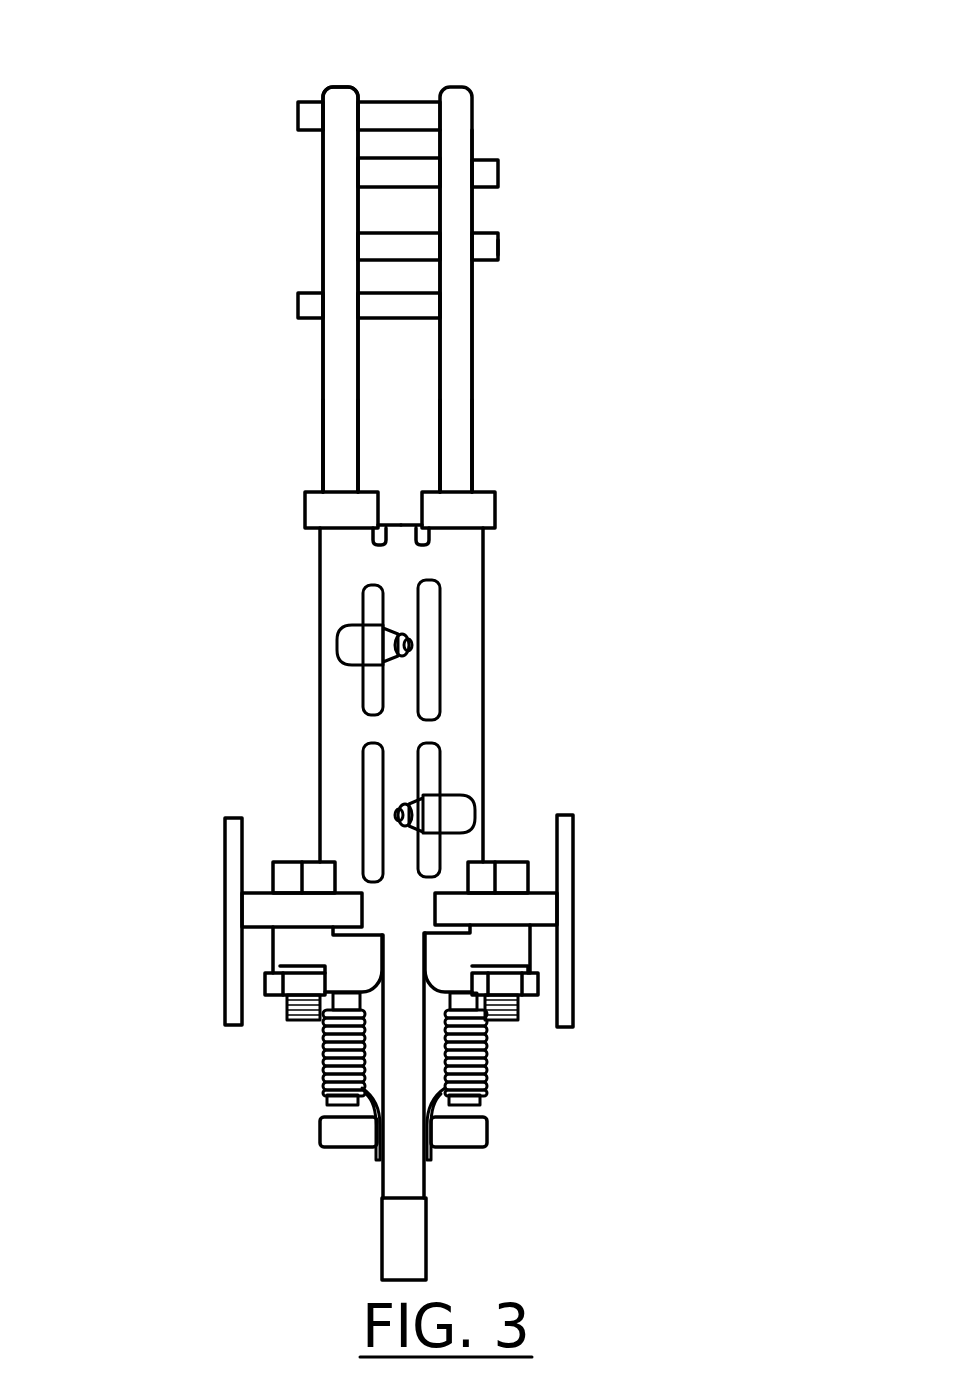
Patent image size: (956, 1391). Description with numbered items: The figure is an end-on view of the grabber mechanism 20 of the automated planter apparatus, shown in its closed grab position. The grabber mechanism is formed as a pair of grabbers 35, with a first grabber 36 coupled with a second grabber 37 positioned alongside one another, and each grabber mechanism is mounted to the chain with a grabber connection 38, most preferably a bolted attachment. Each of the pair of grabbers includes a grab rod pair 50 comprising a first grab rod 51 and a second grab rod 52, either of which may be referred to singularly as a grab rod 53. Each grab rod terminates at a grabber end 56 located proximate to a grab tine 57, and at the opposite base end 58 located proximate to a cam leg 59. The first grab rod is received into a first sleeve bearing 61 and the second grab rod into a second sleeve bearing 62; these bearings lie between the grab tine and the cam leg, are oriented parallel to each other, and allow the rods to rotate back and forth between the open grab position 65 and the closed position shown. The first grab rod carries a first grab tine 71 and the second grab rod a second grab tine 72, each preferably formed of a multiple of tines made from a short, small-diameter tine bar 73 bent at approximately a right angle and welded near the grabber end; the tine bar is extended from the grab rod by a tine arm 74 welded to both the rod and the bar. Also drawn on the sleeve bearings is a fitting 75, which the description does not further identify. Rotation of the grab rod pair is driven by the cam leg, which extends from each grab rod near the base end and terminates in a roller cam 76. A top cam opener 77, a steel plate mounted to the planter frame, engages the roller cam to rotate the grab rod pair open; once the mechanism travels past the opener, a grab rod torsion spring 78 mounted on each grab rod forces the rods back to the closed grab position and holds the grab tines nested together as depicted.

The grabber mechanism 20 is at (140, 78).
The pair of grabbers 35 is at (152, 193).
The first grabber 36 is at (280, 202).
The second grabber 37 is at (675, 259).
The grabber connection 38 is at (425, 1180).
The grab rod pair 50 is at (400, 58).
The first grab rod 51 is at (345, 275).
The second grab rod 52 is at (460, 282).
The grab rod 53 is at (342, 442).
The grabber end 56 is at (338, 88).
The grab tine 57 is at (510, 247).
The base end 58 is at (327, 1100).
The cam leg 59 is at (290, 935).
The first sleeve bearing 61 is at (333, 570).
The second sleeve bearing 62 is at (467, 550).
The open grab position 65 is at (530, 93).
The first grab tine 71 is at (532, 170).
The second grab tine 72 is at (527, 243).
The tine bar 73 is at (170, 245).
The tine arm 74 is at (397, 102).
The fitting 75 is at (335, 646).
The roller cam 76 is at (250, 912).
The top cam opener 77 is at (233, 833).
The grab rod torsion spring 78 is at (518, 1017).